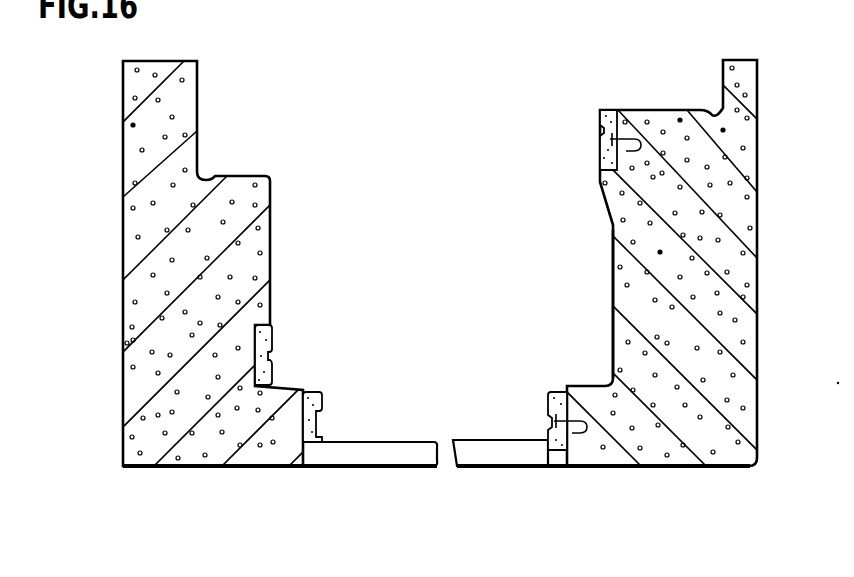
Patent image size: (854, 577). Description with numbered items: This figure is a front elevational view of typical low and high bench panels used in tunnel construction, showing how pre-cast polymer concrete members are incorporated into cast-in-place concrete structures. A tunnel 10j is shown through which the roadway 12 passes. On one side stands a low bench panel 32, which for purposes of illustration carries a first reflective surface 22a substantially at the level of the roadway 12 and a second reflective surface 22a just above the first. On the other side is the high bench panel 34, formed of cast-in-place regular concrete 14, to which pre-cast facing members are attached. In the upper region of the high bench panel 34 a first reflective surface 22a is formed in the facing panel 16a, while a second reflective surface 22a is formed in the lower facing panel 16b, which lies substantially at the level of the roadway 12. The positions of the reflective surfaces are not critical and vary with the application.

The tunnel 10j is at (408, 54).
The low bench panel 32 is at (291, 203).
The high bench panel 34 is at (599, 263).
The cast-in-place concrete 14 is at (613, 333).
The roadway 12 is at (463, 440).
The facing panel 16a is at (600, 112).
The lower facing panel 16b is at (555, 392).
The reflective surface 22a is at (272, 360).